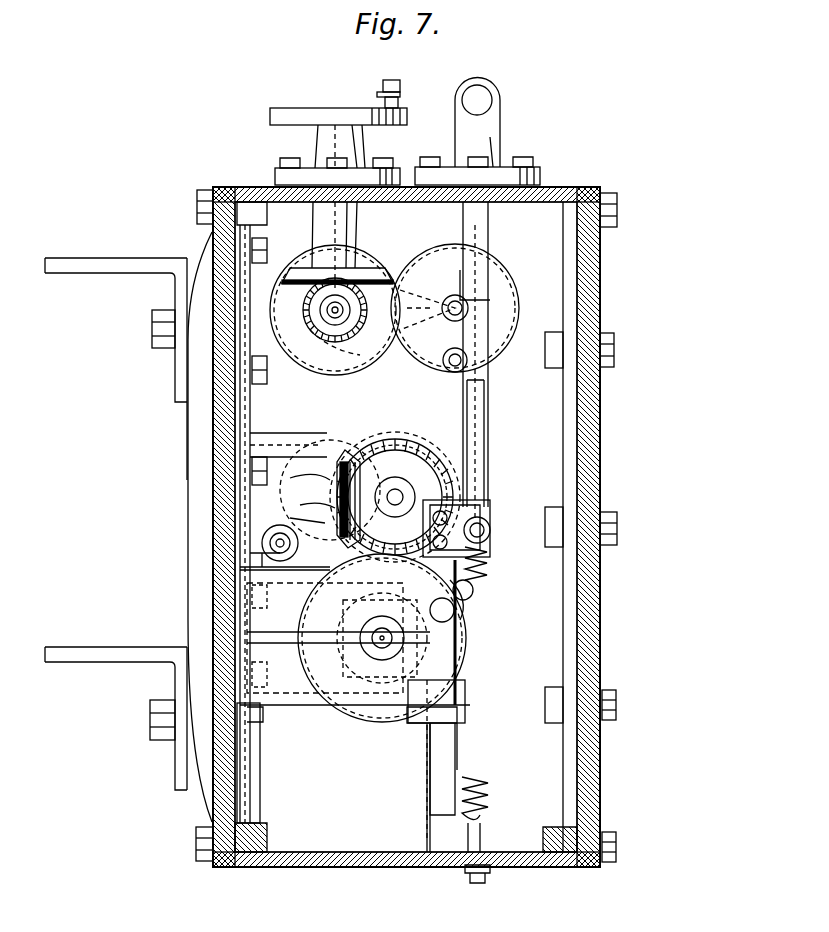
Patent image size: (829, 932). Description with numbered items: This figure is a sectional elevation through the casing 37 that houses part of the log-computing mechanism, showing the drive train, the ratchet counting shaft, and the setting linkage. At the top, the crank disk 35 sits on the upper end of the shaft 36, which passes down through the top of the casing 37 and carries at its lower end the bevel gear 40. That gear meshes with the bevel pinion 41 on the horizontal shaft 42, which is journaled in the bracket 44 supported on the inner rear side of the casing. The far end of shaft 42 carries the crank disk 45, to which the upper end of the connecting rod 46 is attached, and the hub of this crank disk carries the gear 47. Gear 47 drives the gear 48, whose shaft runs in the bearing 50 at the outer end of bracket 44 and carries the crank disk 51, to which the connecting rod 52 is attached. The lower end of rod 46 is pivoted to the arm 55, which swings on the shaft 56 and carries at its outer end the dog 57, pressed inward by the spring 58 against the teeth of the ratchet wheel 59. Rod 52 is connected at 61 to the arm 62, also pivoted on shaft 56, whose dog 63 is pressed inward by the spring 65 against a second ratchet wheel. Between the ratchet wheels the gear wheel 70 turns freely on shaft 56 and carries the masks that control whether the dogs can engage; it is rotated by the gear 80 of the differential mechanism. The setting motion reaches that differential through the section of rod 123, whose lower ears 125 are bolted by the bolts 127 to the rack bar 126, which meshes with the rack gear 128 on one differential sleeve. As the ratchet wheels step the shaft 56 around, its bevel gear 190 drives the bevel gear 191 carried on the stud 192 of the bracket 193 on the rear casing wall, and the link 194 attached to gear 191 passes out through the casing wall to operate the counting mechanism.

The crank disk 35 is at (285, 108).
The shaft 36 is at (325, 150).
The casing 37 is at (308, 867).
The bevel gear 40 is at (330, 273).
The bevel pinion 41 is at (334, 313).
The horizontal shaft 42 is at (345, 320).
The bracket 44 is at (307, 248).
The crank disk 45 is at (392, 272).
The connecting rod 46 is at (364, 358).
The gear 47 is at (372, 264).
The gear 48 is at (508, 348).
The bearing 50 is at (468, 292).
The crank disk 51 is at (520, 296).
The connecting rod 52 is at (448, 388).
The arm 55 is at (310, 482).
The shaft 56 is at (395, 477).
The dog 57 is at (280, 562).
The spring 58 is at (283, 546).
The ratchet wheel 59 is at (335, 502).
The connection 61 is at (480, 549).
The arm 62 is at (475, 588).
The dog 63 is at (470, 595).
The spring 65 is at (455, 612).
The gear wheel 70 is at (352, 455).
The gear 80 is at (462, 663).
The section of rod 123 is at (475, 482).
The ears 125 is at (492, 530).
The rack bar 126 is at (457, 746).
The bolts 127 is at (448, 517).
The rack gear 128 is at (345, 660).
The bevel gear 190 is at (418, 445).
The bevel gear 191 is at (330, 440).
The stud 192 is at (390, 518).
The bracket 193 is at (250, 450).
The link 194 is at (305, 521).